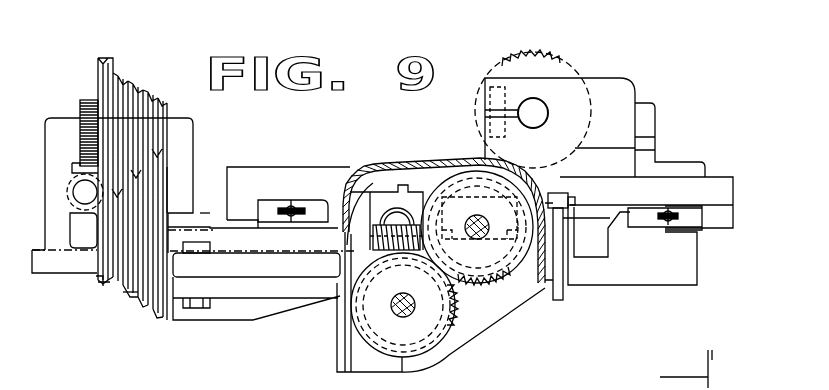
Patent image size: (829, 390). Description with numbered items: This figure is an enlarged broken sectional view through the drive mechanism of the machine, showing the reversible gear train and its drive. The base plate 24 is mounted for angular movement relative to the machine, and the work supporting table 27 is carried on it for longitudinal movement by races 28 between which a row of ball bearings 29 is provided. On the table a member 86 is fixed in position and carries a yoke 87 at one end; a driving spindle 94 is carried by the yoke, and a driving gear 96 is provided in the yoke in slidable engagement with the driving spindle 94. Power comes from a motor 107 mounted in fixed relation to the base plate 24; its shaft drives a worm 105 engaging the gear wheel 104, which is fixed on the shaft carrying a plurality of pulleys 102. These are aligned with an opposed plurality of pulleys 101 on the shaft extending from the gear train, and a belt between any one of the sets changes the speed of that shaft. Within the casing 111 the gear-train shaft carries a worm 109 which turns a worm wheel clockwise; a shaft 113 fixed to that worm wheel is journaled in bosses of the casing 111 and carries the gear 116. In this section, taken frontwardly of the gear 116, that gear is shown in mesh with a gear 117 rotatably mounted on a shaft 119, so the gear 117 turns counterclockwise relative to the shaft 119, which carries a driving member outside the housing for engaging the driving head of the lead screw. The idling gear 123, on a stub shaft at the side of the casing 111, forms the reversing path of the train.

The base plate 24 is at (687, 255).
The work supporting table 27 is at (722, 212).
The races 28 is at (637, 222).
The ball bearings 29 is at (658, 226).
The member 86 is at (648, 125).
The yoke 87 is at (622, 80).
The driving spindle 94 is at (548, 110).
The driving gear 96 is at (548, 52).
The pulleys 101 is at (128, 298).
The pulleys 102 is at (140, 86).
The gear wheel 104 is at (85, 101).
The worm 105 is at (70, 190).
The motor 107 is at (100, 281).
The worm 109 is at (373, 232).
The casing 111 is at (342, 347).
The shaft 113 is at (413, 313).
The gear 116 is at (402, 357).
The gear 117 is at (503, 267).
The shaft 119 is at (474, 216).
The idling gear 123 is at (402, 162).